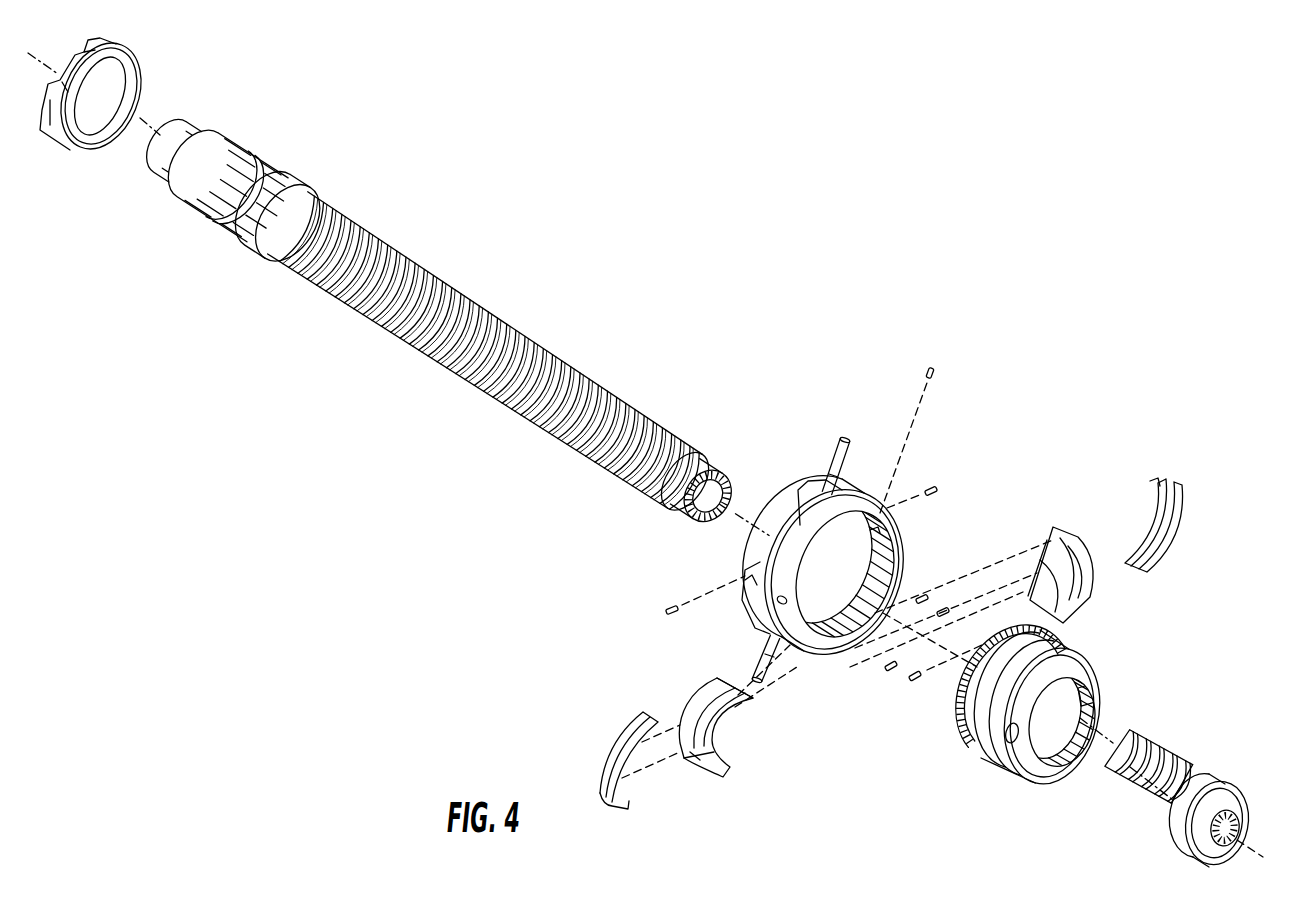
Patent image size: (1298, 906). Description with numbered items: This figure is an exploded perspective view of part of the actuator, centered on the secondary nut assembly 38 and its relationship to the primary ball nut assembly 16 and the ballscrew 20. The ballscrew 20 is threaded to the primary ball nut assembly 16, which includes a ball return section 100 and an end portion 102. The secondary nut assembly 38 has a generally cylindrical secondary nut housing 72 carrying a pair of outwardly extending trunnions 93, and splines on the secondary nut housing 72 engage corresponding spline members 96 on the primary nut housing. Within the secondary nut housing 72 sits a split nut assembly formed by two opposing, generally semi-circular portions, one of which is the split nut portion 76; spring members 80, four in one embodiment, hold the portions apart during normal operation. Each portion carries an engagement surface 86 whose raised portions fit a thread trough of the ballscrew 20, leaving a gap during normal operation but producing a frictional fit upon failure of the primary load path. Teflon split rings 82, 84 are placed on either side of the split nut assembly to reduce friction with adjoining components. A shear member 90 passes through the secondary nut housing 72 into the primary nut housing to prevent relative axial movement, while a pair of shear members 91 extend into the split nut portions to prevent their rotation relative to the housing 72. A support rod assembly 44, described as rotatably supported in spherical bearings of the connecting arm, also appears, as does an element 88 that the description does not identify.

The primary ball nut assembly 16 is at (1073, 670).
The ballscrew 20 is at (614, 478).
The secondary nut assembly 38 is at (1118, 371).
The support rod assembly 44 is at (847, 628).
The secondary nut housing 72 is at (757, 590).
The split nut portion 76 is at (710, 767).
The spring member 80 is at (945, 607).
The split ring 82 is at (630, 807).
The split ring 84 is at (600, 777).
The engagement surface 86 is at (1090, 590).
The shell segment 88 is at (733, 718).
The shear member 90 is at (937, 375).
The shear member 91 is at (940, 487).
The trunnion 93 is at (834, 443).
The spline member 96 is at (967, 747).
The ball return section 100 is at (1163, 740).
The end portion 102 is at (1237, 783).